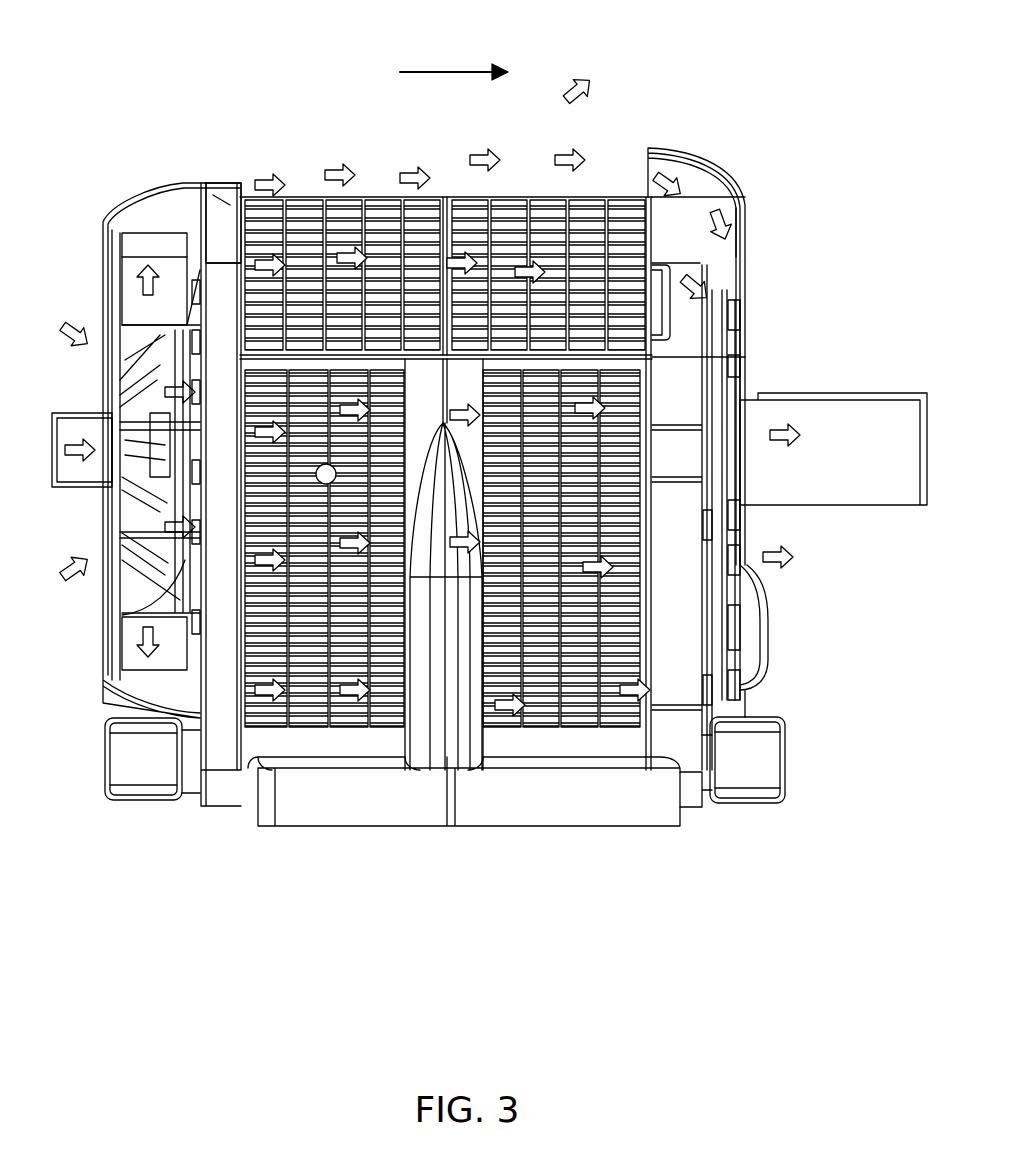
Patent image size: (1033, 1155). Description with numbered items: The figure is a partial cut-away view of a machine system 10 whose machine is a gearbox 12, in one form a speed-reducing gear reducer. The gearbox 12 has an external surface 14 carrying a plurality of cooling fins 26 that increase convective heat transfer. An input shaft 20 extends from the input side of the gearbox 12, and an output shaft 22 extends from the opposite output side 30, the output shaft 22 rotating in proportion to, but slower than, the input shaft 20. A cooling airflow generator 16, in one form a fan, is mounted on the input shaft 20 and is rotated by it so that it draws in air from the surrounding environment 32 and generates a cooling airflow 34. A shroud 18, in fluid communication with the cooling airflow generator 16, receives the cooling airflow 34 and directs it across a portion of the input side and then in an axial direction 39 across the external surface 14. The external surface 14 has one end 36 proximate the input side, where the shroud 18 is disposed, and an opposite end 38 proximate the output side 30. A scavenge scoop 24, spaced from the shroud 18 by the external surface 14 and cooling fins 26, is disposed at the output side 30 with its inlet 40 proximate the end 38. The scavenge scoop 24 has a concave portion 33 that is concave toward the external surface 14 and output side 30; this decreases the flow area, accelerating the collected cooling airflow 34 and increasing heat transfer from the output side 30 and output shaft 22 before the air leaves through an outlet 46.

The machine system 10 is at (808, 80).
The gearbox 12 is at (212, 812).
The external surface 14 is at (410, 383).
The cooling airflow generator 16 is at (105, 598).
The shroud 18 is at (180, 183).
The input shaft 20 is at (72, 487).
The output shaft 22 is at (903, 507).
The scavenge scoop 24 is at (718, 175).
The cooling fins 26 is at (320, 727).
The output side 30 is at (795, 665).
The environment 32 is at (425, 123).
The concave portion 33 is at (745, 200).
The cooling airflow 34 is at (340, 170).
The end of external surface 36 is at (232, 202).
The end of external surface 38 is at (660, 212).
The direction 39 is at (450, 70).
The inlet 40 is at (640, 158).
The outlet 46 is at (775, 526).